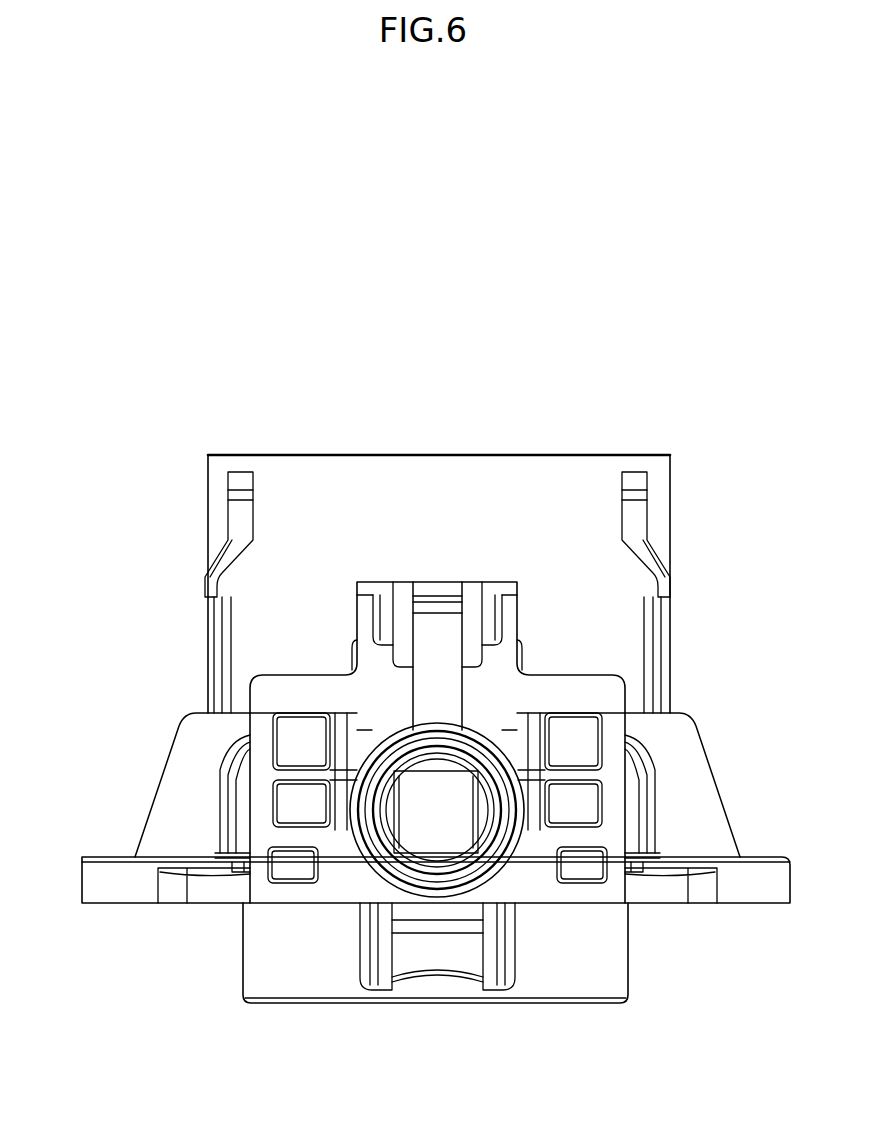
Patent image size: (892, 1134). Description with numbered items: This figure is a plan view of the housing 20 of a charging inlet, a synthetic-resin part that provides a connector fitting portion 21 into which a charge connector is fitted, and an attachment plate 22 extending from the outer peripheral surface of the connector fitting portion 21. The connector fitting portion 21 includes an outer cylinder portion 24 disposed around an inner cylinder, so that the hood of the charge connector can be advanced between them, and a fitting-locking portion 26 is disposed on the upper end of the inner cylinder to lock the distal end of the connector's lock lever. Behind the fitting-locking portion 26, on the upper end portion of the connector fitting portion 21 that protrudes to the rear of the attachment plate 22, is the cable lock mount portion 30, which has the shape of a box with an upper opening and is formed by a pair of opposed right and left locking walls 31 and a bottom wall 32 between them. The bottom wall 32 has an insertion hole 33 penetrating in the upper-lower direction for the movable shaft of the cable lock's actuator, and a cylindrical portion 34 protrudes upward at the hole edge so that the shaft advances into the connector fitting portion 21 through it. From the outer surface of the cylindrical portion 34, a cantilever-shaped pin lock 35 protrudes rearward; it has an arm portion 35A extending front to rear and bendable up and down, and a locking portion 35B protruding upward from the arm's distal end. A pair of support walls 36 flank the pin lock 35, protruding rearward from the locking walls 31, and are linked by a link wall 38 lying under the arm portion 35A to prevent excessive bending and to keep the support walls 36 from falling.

The housing 20 is at (383, 238).
The connector fitting portion 21 is at (567, 477).
The attachment plate 22 is at (762, 895).
The outer cylinder portion 24 is at (559, 980).
The fitting-locking portion 26 is at (456, 958).
The cable lock mount portion 30 is at (570, 922).
The locking walls 31 is at (258, 775).
The bottom wall 32 is at (571, 743).
The insertion hole 33 is at (408, 820).
The cylindrical portion 34 is at (388, 878).
The pin lock 35 is at (463, 627).
The arm portion 35A is at (443, 681).
The locking portion 35B is at (435, 603).
The support walls 36 is at (390, 595).
The link wall 38 is at (470, 590).